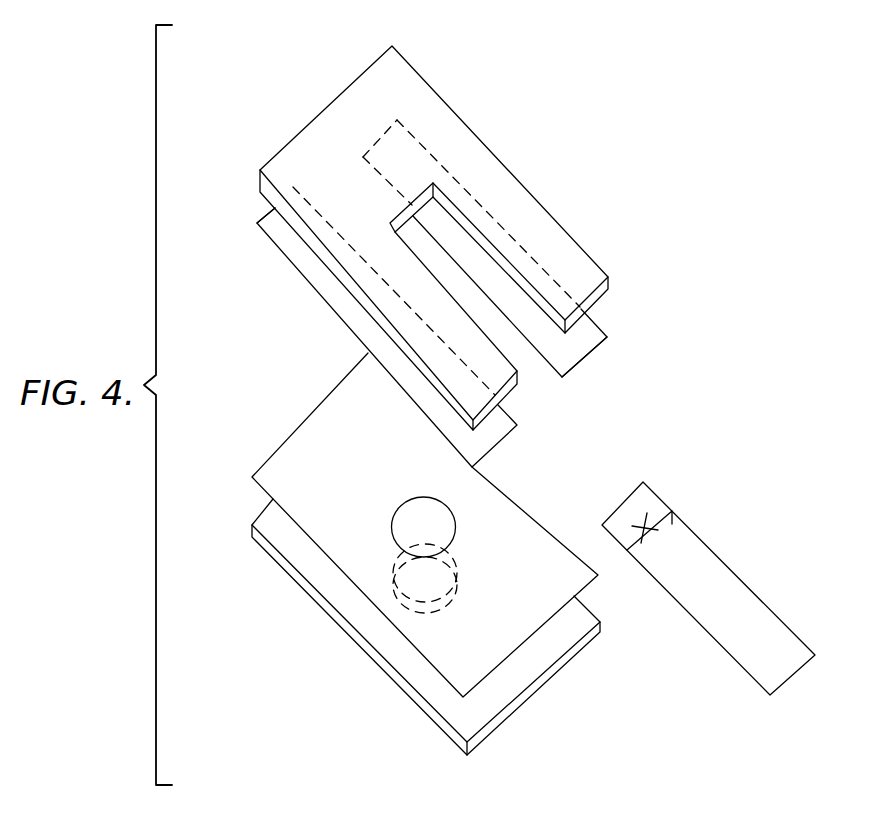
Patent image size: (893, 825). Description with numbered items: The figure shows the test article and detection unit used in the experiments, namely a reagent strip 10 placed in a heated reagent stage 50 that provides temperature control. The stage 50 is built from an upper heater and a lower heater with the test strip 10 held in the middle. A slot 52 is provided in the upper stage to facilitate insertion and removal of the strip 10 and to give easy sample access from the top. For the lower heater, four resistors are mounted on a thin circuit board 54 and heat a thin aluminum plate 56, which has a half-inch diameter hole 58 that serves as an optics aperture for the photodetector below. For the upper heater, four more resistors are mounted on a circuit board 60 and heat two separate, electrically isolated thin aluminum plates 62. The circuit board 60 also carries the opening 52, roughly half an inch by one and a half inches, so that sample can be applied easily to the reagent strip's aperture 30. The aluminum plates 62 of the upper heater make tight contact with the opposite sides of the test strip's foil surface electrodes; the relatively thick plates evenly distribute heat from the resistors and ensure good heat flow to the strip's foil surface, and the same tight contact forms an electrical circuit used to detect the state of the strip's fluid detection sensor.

The reagent strip 10 is at (770, 578).
The reagent strip aperture 30 is at (640, 543).
The heated reagent stage 50 is at (244, 73).
The slot 52 is at (537, 390).
The thin circuit board 54 is at (416, 702).
The aluminum plate 56 is at (252, 477).
The hole 58 is at (392, 541).
The circuit board 60 is at (530, 192).
The aluminum plates 62 is at (607, 337).